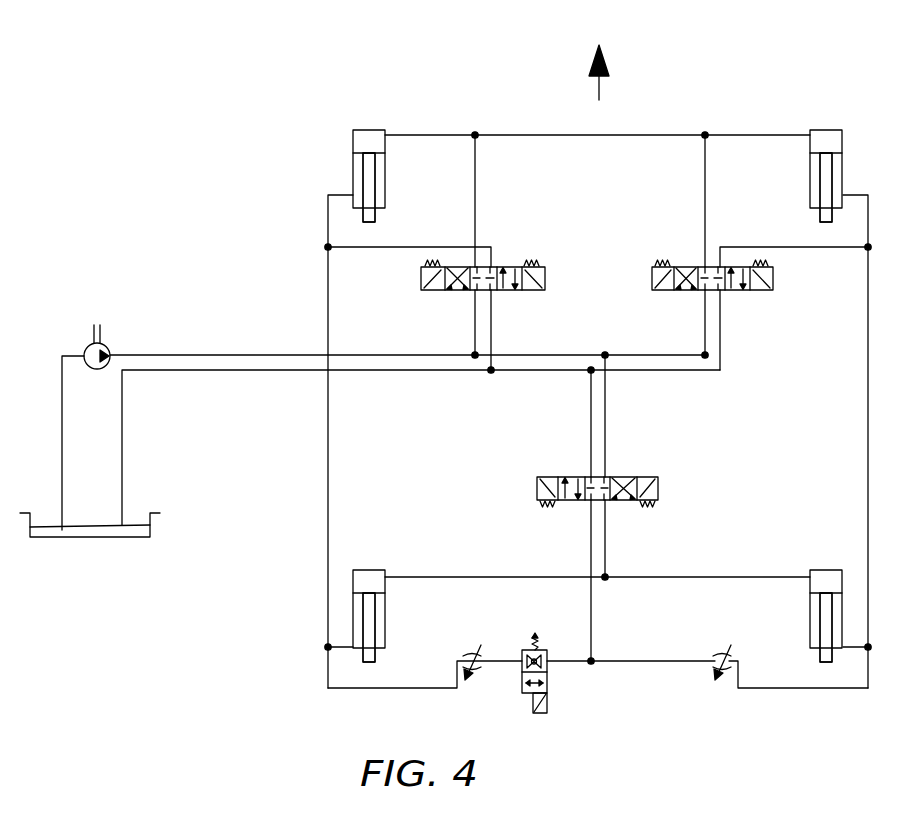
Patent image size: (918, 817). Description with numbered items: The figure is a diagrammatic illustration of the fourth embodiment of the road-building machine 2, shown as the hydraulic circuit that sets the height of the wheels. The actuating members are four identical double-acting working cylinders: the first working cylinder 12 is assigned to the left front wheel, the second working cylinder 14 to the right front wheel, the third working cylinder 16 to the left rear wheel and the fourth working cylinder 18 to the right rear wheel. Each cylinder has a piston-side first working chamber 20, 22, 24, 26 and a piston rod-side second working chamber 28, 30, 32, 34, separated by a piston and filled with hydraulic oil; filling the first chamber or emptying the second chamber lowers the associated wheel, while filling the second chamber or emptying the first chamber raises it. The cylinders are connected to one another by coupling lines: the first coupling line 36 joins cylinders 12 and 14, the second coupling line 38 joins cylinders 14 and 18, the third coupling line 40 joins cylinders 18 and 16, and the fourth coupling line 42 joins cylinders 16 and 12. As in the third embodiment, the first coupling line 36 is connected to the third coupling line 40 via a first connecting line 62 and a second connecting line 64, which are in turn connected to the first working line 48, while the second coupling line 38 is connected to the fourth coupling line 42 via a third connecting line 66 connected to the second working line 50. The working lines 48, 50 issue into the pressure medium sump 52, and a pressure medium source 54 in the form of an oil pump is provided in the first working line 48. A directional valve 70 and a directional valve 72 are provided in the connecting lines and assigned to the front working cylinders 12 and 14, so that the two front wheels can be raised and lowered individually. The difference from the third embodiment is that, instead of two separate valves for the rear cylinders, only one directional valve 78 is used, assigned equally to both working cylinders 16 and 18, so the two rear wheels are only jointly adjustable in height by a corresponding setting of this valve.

The road-building machine 2 is at (260, 65).
The first working cylinder 12 is at (600, 86).
The second working cylinder 14 is at (806, 166).
The third working cylinder 16 is at (395, 609).
The fourth working cylinder 18 is at (803, 602).
The piston-side first working chamber 20 is at (368, 133).
The piston-side first working chamber 22 is at (826, 135).
The piston-side first working chamber 24 is at (368, 575).
The piston-side first working chamber 26 is at (824, 575).
The piston rod-side second working chamber 28 is at (378, 211).
The piston rod-side second working chamber 30 is at (812, 203).
The piston rod-side second working chamber 32 is at (378, 640).
The piston rod-side second working chamber 34 is at (815, 640).
The first coupling line 36 is at (541, 135).
The second coupling line 38 is at (868, 398).
The third coupling line 40 is at (661, 580).
The fourth coupling line 42 is at (328, 468).
The first working line 48 is at (258, 355).
The second working line 50 is at (232, 371).
The pressure medium sump 52 is at (138, 513).
The pressure medium source 54 is at (97, 321).
The first connecting line 62 is at (476, 191).
The second connecting line 64 is at (704, 191).
The third connecting line 66 is at (346, 252).
The directional valve 70 is at (508, 296).
The directional valve 72 is at (692, 296).
The directional valve 78 is at (628, 474).